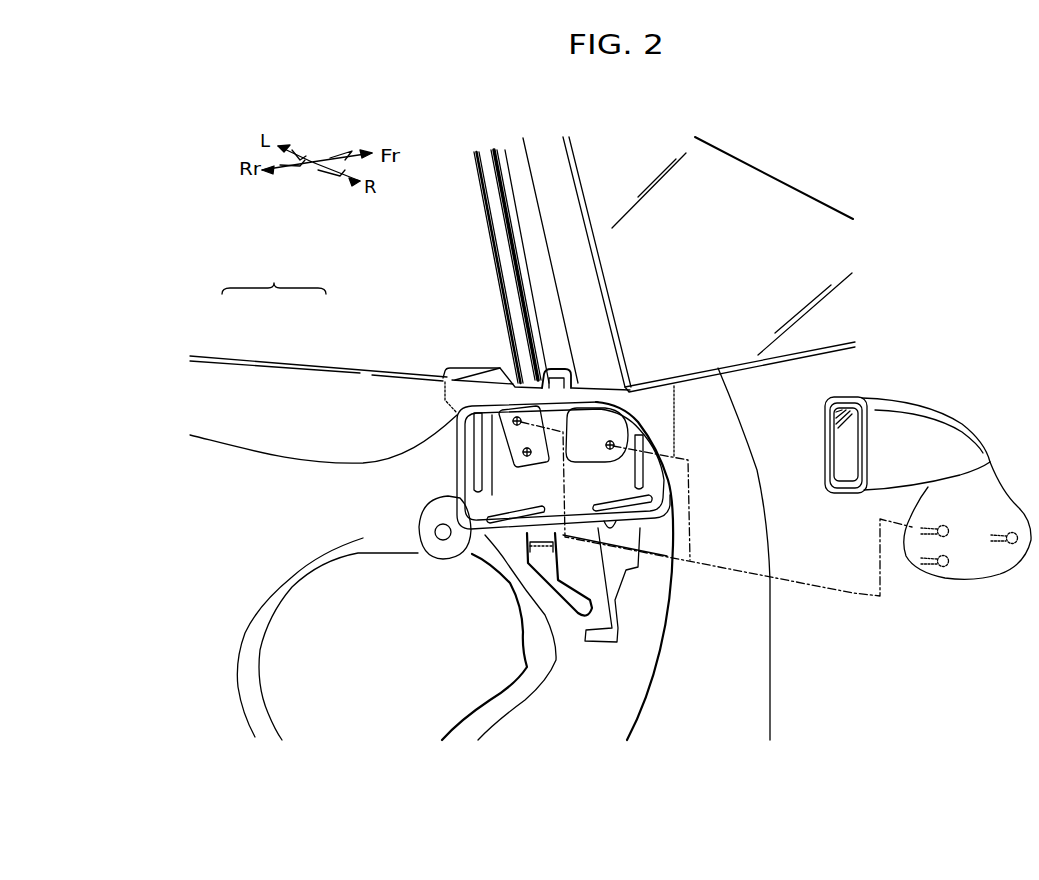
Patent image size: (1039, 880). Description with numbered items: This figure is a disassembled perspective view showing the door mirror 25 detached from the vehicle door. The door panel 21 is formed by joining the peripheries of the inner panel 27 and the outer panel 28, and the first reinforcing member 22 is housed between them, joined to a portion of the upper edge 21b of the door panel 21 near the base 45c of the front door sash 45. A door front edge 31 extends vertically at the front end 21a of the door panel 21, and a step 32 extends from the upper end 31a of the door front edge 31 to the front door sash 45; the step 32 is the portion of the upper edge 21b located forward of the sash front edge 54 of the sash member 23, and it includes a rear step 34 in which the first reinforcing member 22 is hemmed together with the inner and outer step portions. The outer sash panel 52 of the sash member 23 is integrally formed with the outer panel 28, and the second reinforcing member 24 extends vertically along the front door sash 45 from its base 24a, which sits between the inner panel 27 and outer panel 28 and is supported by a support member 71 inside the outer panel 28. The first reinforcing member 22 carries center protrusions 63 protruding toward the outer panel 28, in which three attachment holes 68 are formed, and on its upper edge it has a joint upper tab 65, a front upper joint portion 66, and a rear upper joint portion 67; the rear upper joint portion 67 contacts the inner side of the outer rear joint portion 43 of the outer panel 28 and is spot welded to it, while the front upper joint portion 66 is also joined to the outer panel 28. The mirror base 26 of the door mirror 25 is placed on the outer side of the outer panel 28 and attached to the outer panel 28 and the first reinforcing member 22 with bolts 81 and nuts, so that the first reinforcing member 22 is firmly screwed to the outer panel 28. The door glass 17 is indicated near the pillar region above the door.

The front windshield glass 17 is at (773, 198).
The door panel 21 is at (274, 278).
The front end 21a is at (755, 458).
The upper edge 21b is at (386, 372).
The first reinforcing member 22 is at (478, 538).
The sash member 23 is at (572, 166).
The second reinforcing member 24 is at (495, 207).
The base 24a is at (573, 568).
The door mirror 25 is at (888, 400).
The mirror base 26 is at (972, 558).
The inner panel 27 is at (323, 497).
The outer panel 28 is at (252, 398).
The door front edge 31 is at (773, 550).
The upper end 31a is at (718, 370).
The step 32 is at (700, 386).
The rear step 34 is at (672, 380).
The outer rear joint portion 43 is at (465, 380).
The front door sash 45 is at (572, 242).
The base 45c is at (563, 465).
The outer sash panel 52 is at (555, 214).
The sash front edge 54 is at (582, 278).
The center protrusions 63 is at (518, 467).
The joint upper tab 65 is at (552, 372).
The front upper joint portion 66 is at (648, 386).
The rear upper joint portion 67 is at (488, 378).
The attachment holes 68 is at (515, 426).
The support member 71 is at (620, 578).
The bolts 81 is at (930, 568).